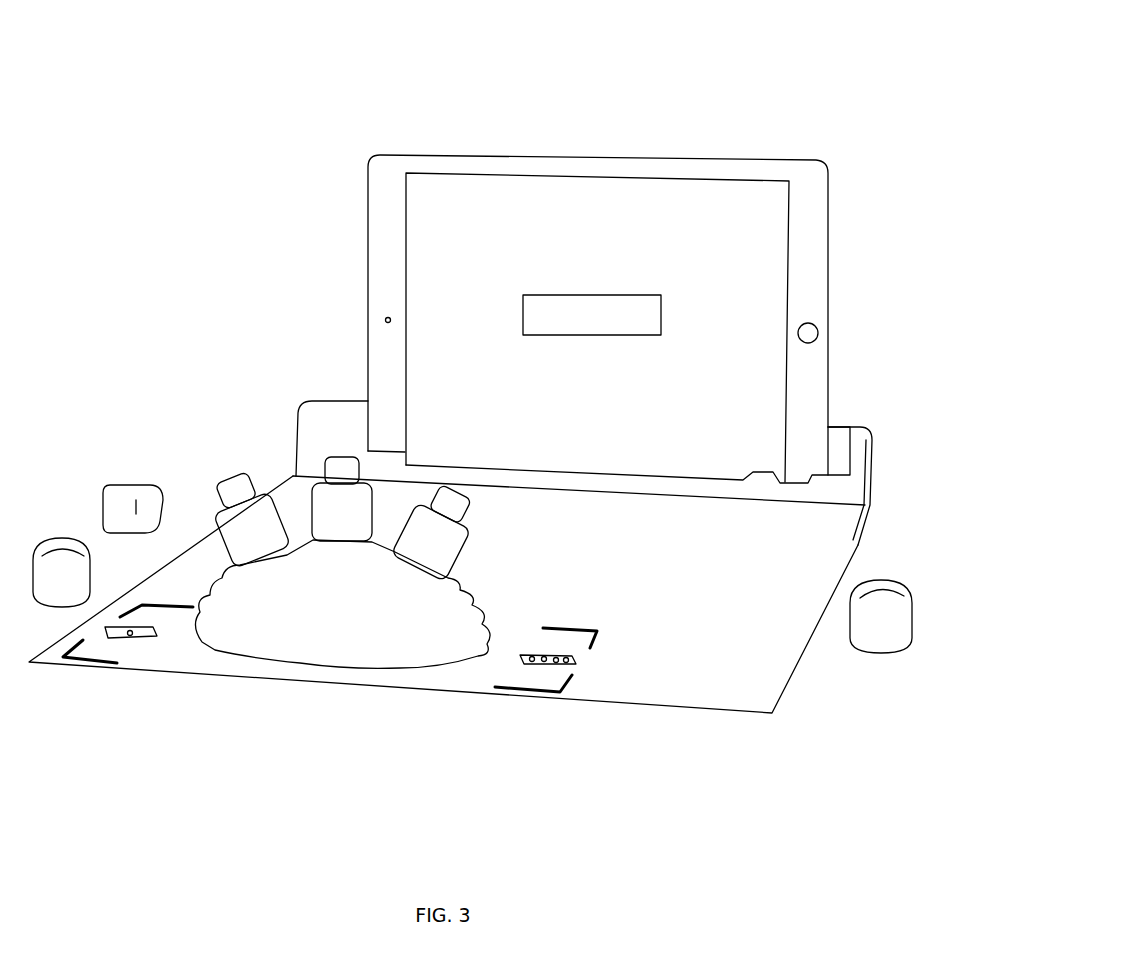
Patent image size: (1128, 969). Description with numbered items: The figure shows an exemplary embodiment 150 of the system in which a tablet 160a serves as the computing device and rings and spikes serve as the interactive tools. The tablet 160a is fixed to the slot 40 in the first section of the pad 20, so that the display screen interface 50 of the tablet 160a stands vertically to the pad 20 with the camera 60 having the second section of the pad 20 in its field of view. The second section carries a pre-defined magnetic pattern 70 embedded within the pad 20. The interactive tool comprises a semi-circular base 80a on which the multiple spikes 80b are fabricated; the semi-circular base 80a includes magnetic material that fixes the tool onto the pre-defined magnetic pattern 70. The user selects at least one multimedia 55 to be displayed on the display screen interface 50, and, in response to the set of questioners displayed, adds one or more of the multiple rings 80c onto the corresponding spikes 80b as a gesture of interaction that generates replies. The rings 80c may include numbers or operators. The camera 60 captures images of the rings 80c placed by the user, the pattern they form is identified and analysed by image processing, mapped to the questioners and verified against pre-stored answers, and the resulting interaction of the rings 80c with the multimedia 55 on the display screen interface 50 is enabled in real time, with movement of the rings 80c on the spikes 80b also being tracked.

The exemplary embodiment 150 is at (772, 74).
The display screen interface 50 is at (592, 192).
The tablet 160a is at (838, 208).
The camera 60 is at (380, 312).
The multimedia 55 is at (562, 296).
The slot 40 is at (830, 432).
The pad 20 is at (742, 690).
The pre-defined magnetic pattern 70 is at (175, 655).
The semi-circular base 80a is at (290, 645).
The multiple spikes 80b is at (236, 482).
The multiple rings 80c is at (143, 503).